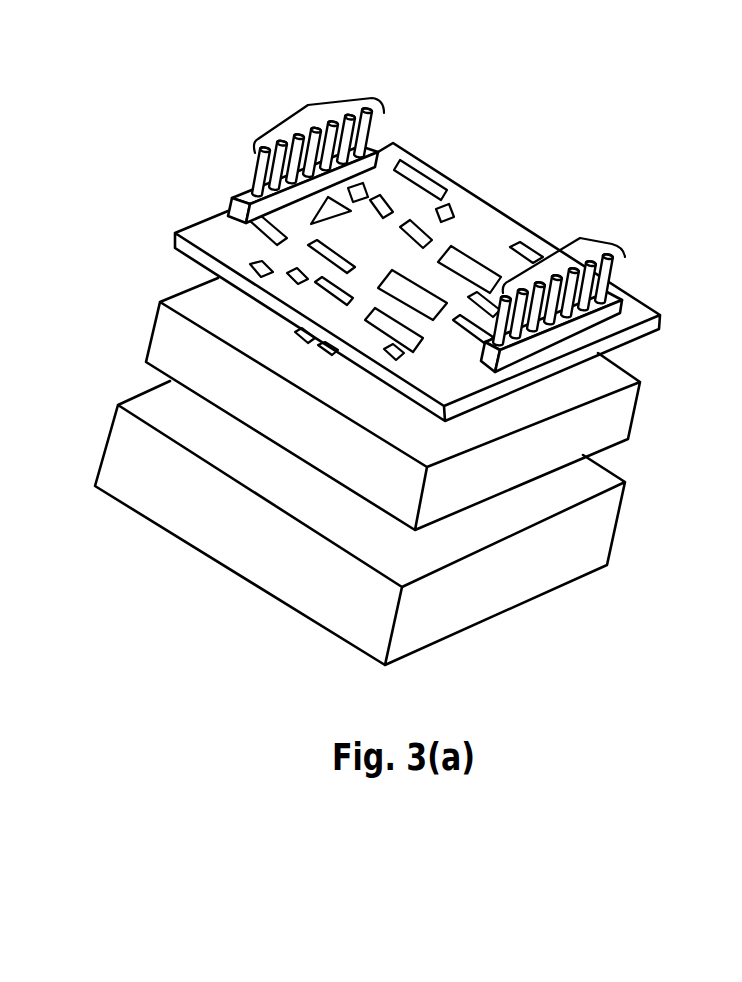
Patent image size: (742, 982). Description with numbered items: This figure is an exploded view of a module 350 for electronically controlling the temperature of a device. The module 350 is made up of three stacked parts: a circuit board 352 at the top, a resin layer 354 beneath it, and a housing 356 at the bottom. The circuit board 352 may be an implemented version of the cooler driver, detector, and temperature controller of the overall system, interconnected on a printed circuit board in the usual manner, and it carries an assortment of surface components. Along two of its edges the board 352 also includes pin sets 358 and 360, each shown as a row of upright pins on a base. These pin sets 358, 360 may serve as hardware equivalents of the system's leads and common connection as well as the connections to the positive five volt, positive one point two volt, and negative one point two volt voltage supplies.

The module 350 is at (492, 34).
The circuit board 352 is at (505, 214).
The resin layer 354 is at (628, 425).
The housing 356 is at (610, 558).
The pin set 358 is at (309, 104).
The pin set 360 is at (582, 238).